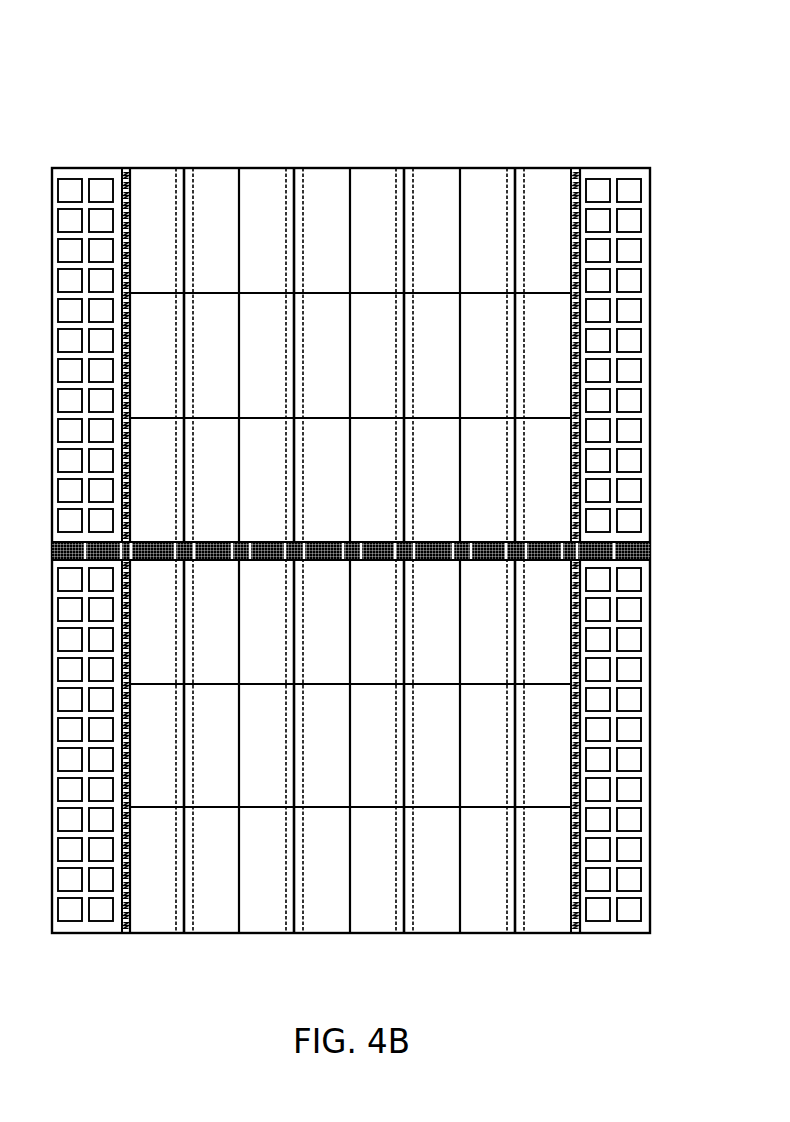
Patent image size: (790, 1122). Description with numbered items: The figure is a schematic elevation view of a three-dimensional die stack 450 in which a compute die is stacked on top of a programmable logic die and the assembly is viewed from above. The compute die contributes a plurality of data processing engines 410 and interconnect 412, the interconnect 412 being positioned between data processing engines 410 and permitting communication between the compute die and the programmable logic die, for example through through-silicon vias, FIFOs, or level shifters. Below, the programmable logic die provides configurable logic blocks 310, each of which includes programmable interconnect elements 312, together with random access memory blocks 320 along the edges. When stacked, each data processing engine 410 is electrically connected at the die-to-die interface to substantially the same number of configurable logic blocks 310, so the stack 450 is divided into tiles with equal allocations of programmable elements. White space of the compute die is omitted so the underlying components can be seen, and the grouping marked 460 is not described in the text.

The 3D die stack 450 is at (121, 132).
The gate line group 460 is at (195, 146).
The data processing engine 410 is at (218, 168).
The interconnect 412 is at (295, 168).
The configurable logic block 310 is at (563, 80).
The programmable interconnect element 312 is at (523, 153).
The random access memory block 320 is at (629, 177).